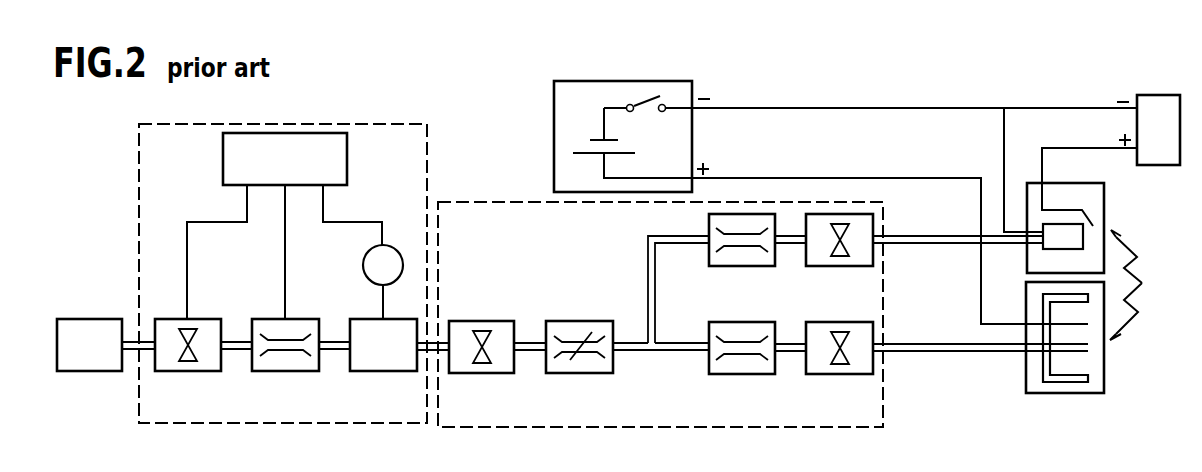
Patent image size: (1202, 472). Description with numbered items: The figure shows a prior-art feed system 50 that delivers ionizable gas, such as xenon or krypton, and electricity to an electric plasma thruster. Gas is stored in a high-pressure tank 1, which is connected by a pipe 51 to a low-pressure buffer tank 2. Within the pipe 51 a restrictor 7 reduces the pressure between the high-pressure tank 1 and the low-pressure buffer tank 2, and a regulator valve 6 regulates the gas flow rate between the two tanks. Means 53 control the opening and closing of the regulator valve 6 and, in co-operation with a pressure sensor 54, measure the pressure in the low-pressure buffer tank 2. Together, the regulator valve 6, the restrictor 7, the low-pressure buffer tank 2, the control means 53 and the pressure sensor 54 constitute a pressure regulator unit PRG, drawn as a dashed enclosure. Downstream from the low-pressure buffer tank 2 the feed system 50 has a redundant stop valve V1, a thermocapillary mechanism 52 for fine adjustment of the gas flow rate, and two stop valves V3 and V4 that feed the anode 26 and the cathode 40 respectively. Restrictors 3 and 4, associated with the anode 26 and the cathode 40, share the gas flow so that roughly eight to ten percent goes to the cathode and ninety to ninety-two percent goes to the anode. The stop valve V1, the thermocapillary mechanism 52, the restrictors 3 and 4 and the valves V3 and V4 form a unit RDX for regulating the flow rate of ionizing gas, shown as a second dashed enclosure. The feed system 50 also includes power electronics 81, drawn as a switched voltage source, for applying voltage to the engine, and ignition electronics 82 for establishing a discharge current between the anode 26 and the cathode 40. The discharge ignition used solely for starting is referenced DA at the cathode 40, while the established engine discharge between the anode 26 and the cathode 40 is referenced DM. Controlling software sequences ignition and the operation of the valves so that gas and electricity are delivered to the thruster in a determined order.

The high-pressure tank 1 is at (79, 356).
The low-pressure buffer tank 2 is at (379, 356).
The restrictor 3 is at (740, 267).
The restrictor 4 is at (740, 375).
The regulator valve 6 is at (188, 372).
The restrictor 7 is at (284, 372).
The anode 26 is at (1064, 394).
The cathode 40 is at (1087, 213).
The feed system 50 is at (265, 251).
The pipe 51 is at (138, 351).
The thermocapillary mechanism 52 is at (582, 374).
The means for controlling the regulator valve 53 is at (273, 168).
The pressure sensor 54 is at (373, 277).
The power electronics 81 is at (554, 108).
The ignition electronics 82 is at (1148, 140).
The redundant stop valve V1 is at (482, 374).
The stop valve V3 is at (846, 375).
The stop valve V4 is at (846, 267).
The pressure regulator unit PRG is at (425, 123).
The flow rate regulating unit RDX is at (471, 205).
The discharge ignition DA is at (1088, 233).
The established engine discharge DM is at (1141, 283).